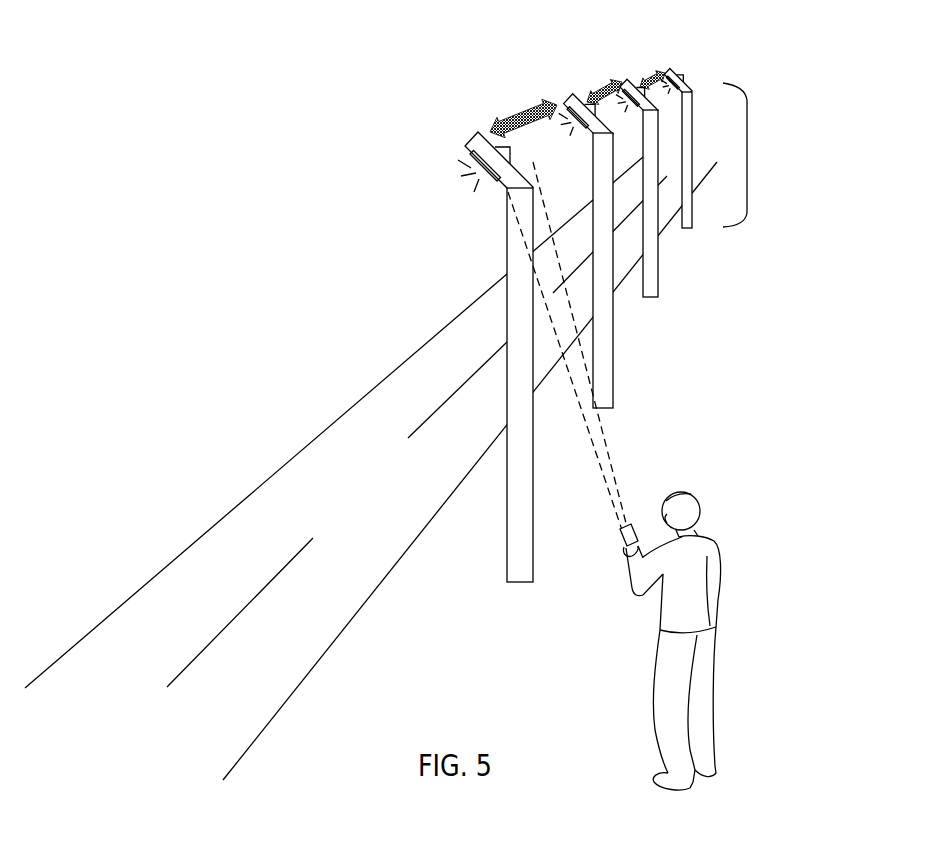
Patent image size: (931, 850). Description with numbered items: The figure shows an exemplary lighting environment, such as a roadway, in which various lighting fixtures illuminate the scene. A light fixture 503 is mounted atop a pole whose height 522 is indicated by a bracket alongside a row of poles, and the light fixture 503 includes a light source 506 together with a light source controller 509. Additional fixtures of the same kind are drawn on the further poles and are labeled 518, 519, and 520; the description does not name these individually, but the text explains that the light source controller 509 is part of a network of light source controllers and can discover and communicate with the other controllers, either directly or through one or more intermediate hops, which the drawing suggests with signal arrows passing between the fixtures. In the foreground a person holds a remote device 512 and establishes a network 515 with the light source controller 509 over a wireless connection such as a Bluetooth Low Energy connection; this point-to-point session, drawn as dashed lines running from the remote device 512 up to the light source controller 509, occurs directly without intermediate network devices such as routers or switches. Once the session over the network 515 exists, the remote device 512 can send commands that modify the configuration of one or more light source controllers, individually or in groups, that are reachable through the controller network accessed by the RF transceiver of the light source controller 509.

The light fixture 503 is at (469, 126).
The light source 506 is at (472, 169).
The light source controller 509 is at (509, 148).
The remote device 512 is at (638, 521).
The network 515 is at (580, 466).
The second luminaire pole 518 is at (584, 95).
The third luminaire pole 519 is at (631, 76).
The fourth luminaire pole 520 is at (675, 60).
The height 522 is at (680, 214).